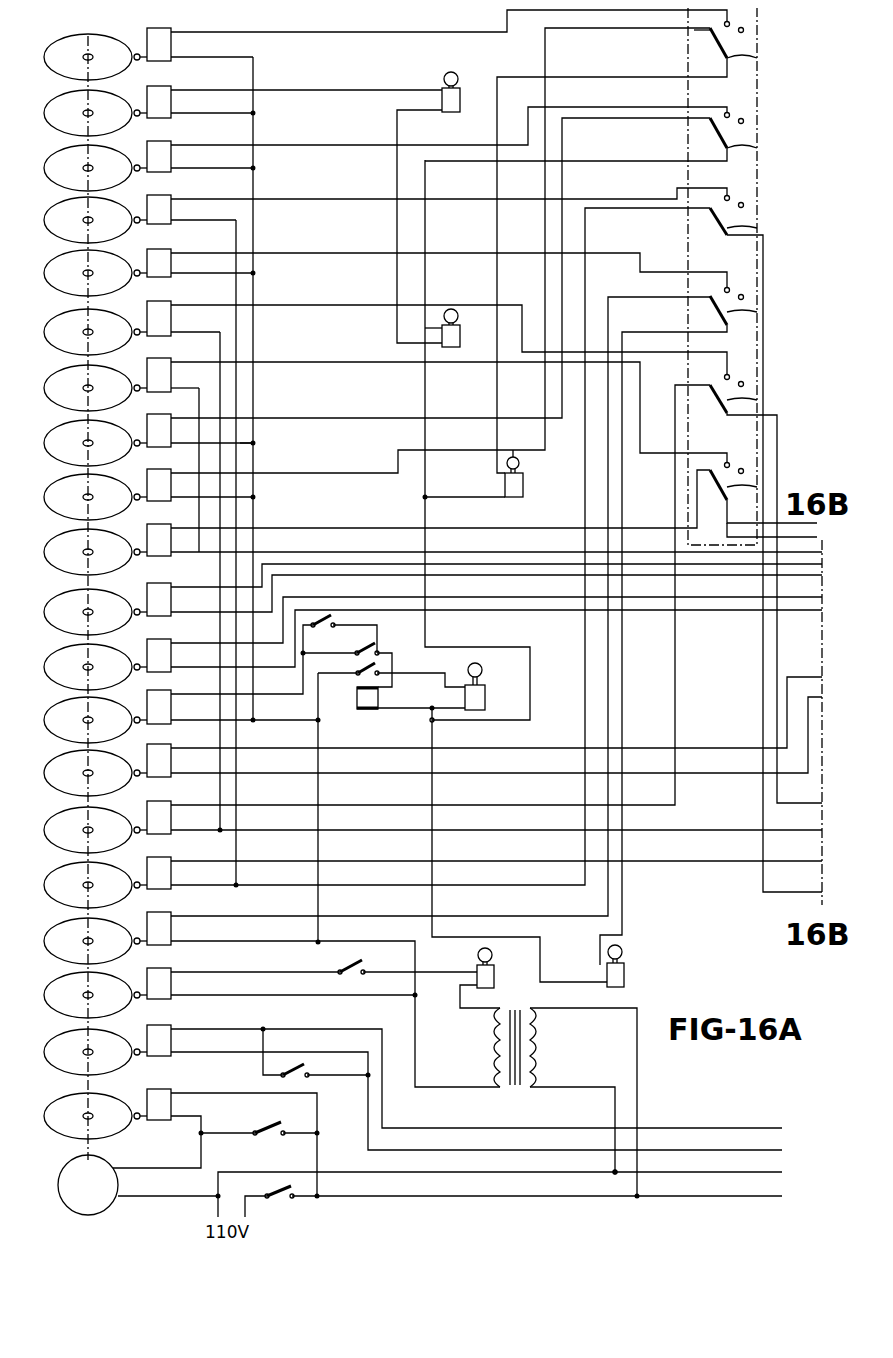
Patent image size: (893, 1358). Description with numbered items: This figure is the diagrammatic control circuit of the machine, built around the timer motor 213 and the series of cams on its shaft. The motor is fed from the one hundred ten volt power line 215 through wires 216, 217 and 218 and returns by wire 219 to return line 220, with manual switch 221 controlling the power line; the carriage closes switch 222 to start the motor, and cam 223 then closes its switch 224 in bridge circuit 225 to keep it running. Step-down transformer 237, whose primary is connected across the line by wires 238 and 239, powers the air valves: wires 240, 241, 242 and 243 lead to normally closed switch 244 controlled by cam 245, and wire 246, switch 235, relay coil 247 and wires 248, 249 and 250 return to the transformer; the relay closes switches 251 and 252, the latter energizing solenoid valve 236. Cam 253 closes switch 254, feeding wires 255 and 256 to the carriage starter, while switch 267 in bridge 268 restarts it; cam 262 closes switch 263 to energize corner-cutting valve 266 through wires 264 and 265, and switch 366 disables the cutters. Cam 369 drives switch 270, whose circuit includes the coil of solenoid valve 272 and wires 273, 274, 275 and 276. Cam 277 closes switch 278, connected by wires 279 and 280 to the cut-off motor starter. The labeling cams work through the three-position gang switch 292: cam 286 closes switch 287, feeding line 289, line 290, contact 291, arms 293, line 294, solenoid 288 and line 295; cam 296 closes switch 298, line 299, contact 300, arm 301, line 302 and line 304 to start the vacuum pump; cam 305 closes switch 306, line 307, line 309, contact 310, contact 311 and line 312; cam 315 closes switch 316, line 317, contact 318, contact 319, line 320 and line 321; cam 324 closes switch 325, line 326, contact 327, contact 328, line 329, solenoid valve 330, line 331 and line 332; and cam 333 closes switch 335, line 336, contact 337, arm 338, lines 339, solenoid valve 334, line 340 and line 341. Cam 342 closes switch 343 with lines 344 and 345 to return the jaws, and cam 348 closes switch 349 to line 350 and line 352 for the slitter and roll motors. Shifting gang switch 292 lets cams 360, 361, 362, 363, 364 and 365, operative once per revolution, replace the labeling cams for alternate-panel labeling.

The cam 365 is at (72, 38).
The cam 369 is at (66, 100).
The cam 364 is at (64, 160).
The cam 363 is at (64, 206).
The cam 362 is at (64, 258).
The cam 361 is at (64, 316).
The cam 360 is at (64, 370).
The cam 333 is at (64, 426).
The cam 324 is at (60, 488).
The cam 296 is at (64, 554).
The cam 348 is at (66, 598).
The cam 342 is at (62, 660).
The cam 245 is at (62, 706).
The cam 277 is at (58, 766).
The cam 315 is at (58, 820).
The cam 305 is at (58, 874).
The cam 286 is at (62, 926).
The cam 262 is at (62, 982).
The cam 253 is at (62, 1042).
The cam 223 is at (62, 1102).
The switch 270 is at (172, 106).
The wire 276 is at (205, 126).
The cam switch 349 is at (172, 604).
The normally open switch 343 is at (172, 660).
The normally closed switch 244 is at (172, 711).
The switch 278 is at (172, 766).
The switch 316 is at (172, 822).
The switch 306 is at (172, 878).
The switch 287 is at (172, 934).
The switch 263 is at (172, 988).
The switch 254 is at (172, 1045).
The switch 224 is at (172, 1108).
The line 341 is at (248, 443).
The cam switch 335 is at (186, 418).
The cam switch 325 is at (186, 473).
The line 332 is at (201, 503).
The cam switch 298 is at (160, 557).
The contact 327 is at (704, 28).
The movable contact 328 is at (762, 57).
The line 329 is at (660, 70).
The line 326 is at (302, 473).
The solenoid valve 272 is at (442, 103).
The wire 273 is at (397, 173).
The solenoid valve 334 is at (460, 338).
The line 340 is at (425, 388).
The contact 337 is at (704, 118).
The movable arm 338 is at (762, 147).
The lines 339 is at (634, 161).
The line 336 is at (302, 418).
The contact 311 is at (705, 210).
The movable contact 310 is at (762, 217).
The three position gang switch 292 is at (762, 192).
The line 312 is at (585, 510).
The contact 291 is at (706, 296).
The movable contact arms 293 is at (767, 305).
The line 294 is at (652, 332).
The line 290 is at (440, 606).
The contact 318 is at (708, 385).
The movable contact 319 is at (768, 393).
The line 317 is at (298, 808).
The contact 300 is at (697, 476).
The movable switch arm 301 is at (757, 487).
The line 302 is at (772, 519).
The line 304 is at (772, 538).
The line 299 is at (318, 528).
The solenoid valve 330 is at (523, 490).
The line 331 is at (456, 497).
The wire 274 is at (425, 512).
The wire 275 is at (253, 390).
The line 350 is at (308, 567).
The lines 344 is at (340, 600).
The line 352 is at (818, 572).
The line 345 is at (792, 608).
The switch 235 is at (336, 621).
The switch 251 is at (372, 648).
The switch 252 is at (358, 668).
The relay coil 247 is at (372, 722).
The wire 248 is at (408, 710).
The solenoid valve 236 is at (485, 702).
The wire 249 is at (434, 790).
The line 295 is at (540, 968).
The wire 242 is at (304, 724).
The wire 246 is at (198, 694).
The wire 243 is at (208, 724).
The wire 241 is at (316, 792).
The wire 279 is at (298, 754).
The wire 280 is at (810, 706).
The line 320 is at (777, 456).
The line 309 is at (797, 896).
The line 321 is at (524, 834).
The line 307 is at (296, 864).
The line 289 is at (260, 946).
The wire 264 is at (276, 974).
The switch 366 is at (342, 968).
The solenoid valve 266 is at (478, 966).
The wire 265 is at (320, 996).
The solenoid 288 is at (624, 978).
The wire 250 is at (472, 1000).
The wire 240 is at (416, 1066).
The step-down transformer 237 is at (535, 1008).
The wire 239 is at (645, 1070).
The wire 238 is at (618, 1092).
The wire 255 is at (330, 1034).
The wire 256 is at (774, 1150).
The bridge circuit 268 is at (260, 1060).
The switch 267 is at (314, 1080).
The bridge circuit 225 is at (240, 1092).
The wire 218 is at (200, 1140).
The switch 222 is at (272, 1126).
The wire 217 is at (310, 1136).
The timer motor 213 is at (58, 1186).
The wire 219 is at (194, 1196).
The wire 216 is at (318, 1172).
The return line 220 is at (776, 1172).
The manual switch 221 is at (284, 1204).
The power line 215 is at (412, 1200).